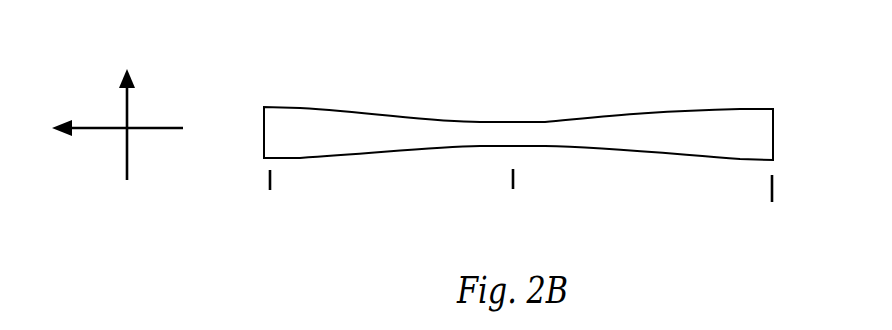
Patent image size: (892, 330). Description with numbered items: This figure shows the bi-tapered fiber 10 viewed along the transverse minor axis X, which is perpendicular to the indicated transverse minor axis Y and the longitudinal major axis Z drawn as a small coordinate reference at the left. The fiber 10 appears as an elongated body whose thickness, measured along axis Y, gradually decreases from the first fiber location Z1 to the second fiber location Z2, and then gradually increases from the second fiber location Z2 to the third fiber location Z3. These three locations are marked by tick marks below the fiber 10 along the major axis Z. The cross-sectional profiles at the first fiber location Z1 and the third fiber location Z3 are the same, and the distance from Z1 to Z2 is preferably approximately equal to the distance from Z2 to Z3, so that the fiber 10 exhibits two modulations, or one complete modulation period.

The bi-tapered fiber 10 is at (287, 95).
The transverse minor axis Y is at (127, 106).
The major axis Z is at (102, 132).
The first fiber location Z1 is at (277, 208).
The second fiber location Z2 is at (521, 208).
The third fiber location Z3 is at (781, 212).